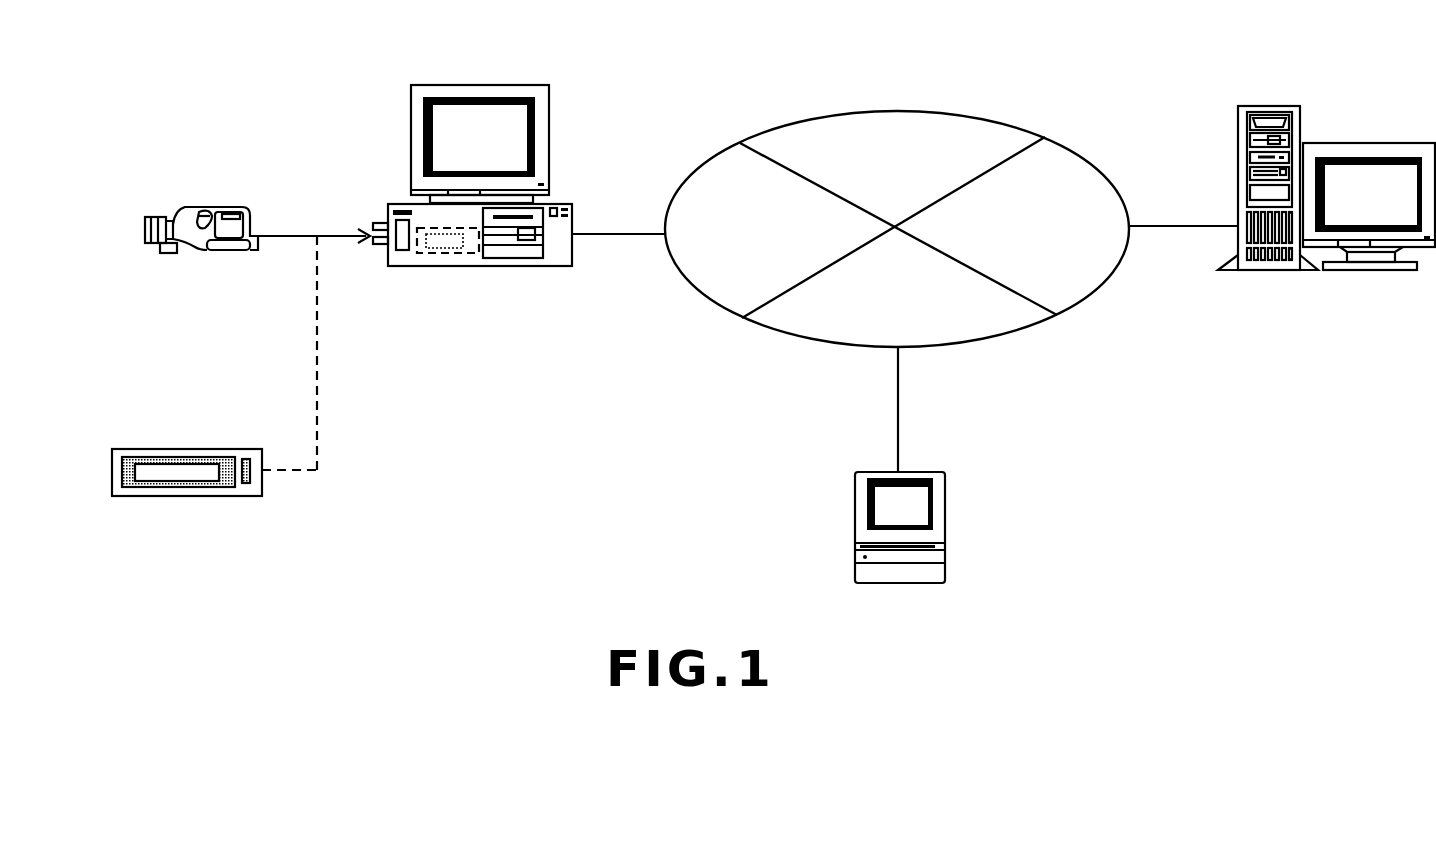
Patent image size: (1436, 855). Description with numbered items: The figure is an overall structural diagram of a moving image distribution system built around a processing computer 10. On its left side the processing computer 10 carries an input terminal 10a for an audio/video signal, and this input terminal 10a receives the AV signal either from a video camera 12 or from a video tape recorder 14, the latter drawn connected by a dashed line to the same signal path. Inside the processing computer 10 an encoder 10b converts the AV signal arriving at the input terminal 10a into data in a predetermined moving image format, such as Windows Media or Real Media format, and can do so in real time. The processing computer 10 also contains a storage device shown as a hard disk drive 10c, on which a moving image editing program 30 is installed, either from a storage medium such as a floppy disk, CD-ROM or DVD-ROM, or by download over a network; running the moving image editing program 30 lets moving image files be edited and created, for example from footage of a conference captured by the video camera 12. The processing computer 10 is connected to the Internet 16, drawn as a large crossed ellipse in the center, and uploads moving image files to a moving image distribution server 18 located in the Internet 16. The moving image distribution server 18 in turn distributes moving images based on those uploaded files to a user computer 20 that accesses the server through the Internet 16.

The processing computer 10 is at (430, 83).
The input terminal 10a is at (378, 220).
The encoder 10b is at (401, 250).
The hard disk drive 10c is at (472, 253).
The moving image editing program 30 is at (445, 249).
The video camera 12 is at (152, 217).
The video tape recorder 14 is at (133, 453).
The Internet 16 is at (787, 123).
The moving image distribution server 18 is at (1260, 105).
The user computer 20 is at (872, 583).